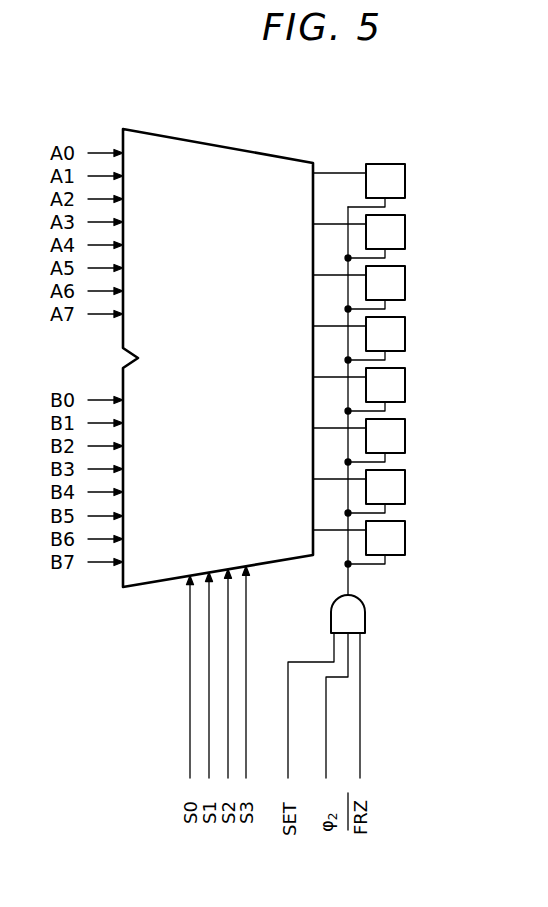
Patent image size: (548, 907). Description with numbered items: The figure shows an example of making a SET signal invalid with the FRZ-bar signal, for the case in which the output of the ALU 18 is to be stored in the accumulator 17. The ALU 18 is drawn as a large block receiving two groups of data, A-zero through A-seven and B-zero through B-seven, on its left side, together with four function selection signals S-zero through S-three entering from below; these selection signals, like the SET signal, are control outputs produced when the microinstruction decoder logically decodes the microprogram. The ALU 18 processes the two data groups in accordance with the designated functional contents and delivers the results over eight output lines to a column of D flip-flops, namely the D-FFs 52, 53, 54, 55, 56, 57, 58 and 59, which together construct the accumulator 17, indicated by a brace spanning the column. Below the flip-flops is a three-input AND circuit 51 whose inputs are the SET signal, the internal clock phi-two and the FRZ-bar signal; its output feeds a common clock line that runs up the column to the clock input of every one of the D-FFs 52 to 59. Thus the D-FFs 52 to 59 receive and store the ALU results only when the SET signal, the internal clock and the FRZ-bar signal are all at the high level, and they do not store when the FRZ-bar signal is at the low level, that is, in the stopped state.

The accumulator 17 is at (408, 377).
The ALU 18 is at (257, 153).
The 3-input AND circuit 51 is at (366, 612).
The D-FF 52 is at (405, 183).
The D-FF 53 is at (405, 234).
The D-FF 54 is at (405, 285).
The D-FF 55 is at (405, 336).
The D-FF 56 is at (405, 387).
The D-FF 57 is at (405, 438).
The D-FF 58 is at (405, 489).
The D-FF 59 is at (382, 544).